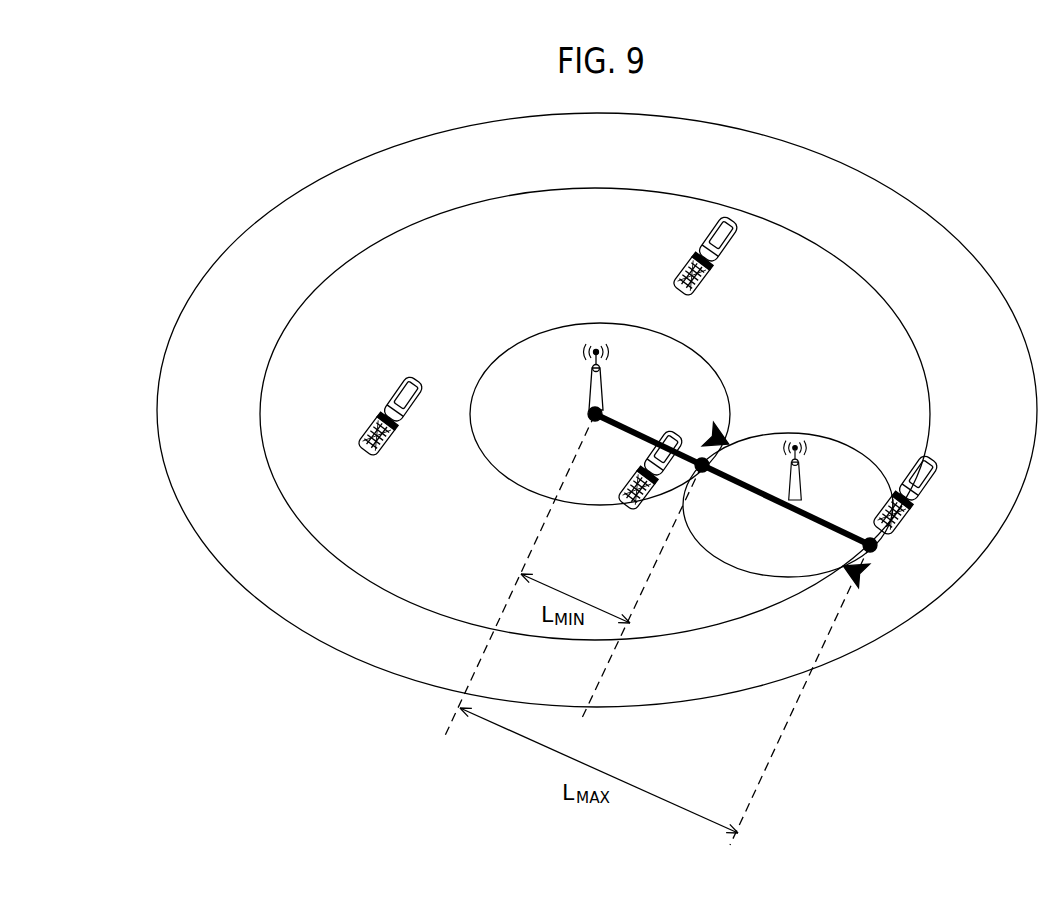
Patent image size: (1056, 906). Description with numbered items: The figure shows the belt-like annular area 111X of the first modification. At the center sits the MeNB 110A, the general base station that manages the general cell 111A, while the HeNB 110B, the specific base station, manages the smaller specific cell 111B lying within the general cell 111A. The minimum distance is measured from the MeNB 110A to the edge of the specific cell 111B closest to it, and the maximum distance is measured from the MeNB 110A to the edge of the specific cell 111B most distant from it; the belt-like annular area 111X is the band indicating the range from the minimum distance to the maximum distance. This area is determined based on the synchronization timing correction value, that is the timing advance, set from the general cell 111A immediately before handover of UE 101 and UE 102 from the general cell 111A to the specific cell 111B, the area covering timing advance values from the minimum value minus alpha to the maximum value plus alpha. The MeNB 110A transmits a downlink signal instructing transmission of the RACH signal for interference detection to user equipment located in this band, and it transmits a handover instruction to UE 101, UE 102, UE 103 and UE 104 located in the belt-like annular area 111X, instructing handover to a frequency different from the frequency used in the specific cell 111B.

The belt-like annular area 111X is at (837, 297).
The general cell 111A is at (880, 182).
The specific cell 111B is at (778, 577).
The MeNB 110A is at (593, 385).
The HeNB 110B is at (793, 452).
The UE 101 is at (643, 510).
The UE 102 is at (913, 523).
The UE 103 is at (398, 450).
The UE 104 is at (732, 258).